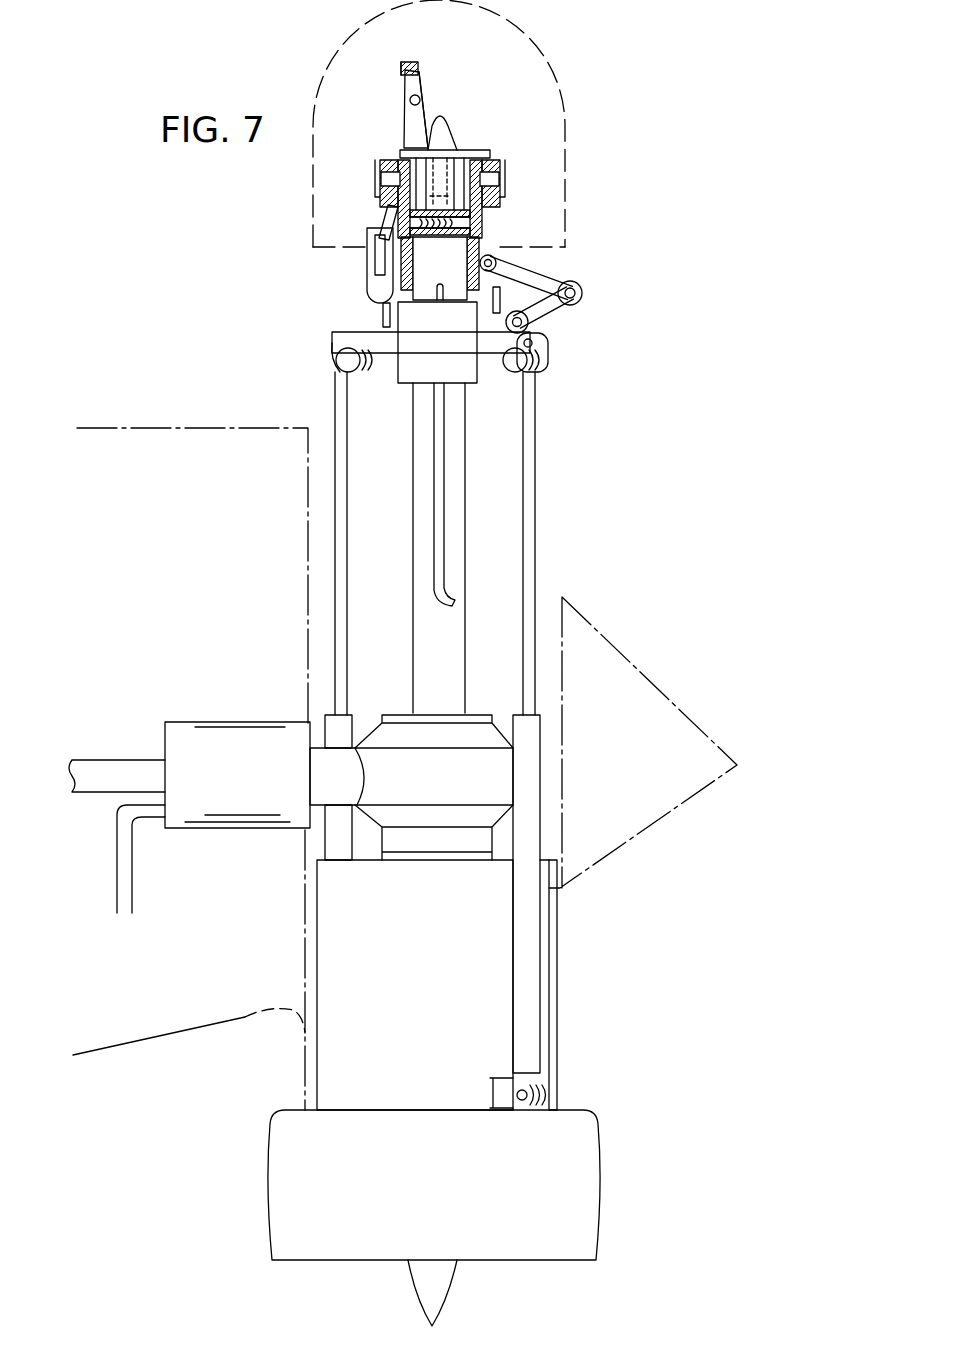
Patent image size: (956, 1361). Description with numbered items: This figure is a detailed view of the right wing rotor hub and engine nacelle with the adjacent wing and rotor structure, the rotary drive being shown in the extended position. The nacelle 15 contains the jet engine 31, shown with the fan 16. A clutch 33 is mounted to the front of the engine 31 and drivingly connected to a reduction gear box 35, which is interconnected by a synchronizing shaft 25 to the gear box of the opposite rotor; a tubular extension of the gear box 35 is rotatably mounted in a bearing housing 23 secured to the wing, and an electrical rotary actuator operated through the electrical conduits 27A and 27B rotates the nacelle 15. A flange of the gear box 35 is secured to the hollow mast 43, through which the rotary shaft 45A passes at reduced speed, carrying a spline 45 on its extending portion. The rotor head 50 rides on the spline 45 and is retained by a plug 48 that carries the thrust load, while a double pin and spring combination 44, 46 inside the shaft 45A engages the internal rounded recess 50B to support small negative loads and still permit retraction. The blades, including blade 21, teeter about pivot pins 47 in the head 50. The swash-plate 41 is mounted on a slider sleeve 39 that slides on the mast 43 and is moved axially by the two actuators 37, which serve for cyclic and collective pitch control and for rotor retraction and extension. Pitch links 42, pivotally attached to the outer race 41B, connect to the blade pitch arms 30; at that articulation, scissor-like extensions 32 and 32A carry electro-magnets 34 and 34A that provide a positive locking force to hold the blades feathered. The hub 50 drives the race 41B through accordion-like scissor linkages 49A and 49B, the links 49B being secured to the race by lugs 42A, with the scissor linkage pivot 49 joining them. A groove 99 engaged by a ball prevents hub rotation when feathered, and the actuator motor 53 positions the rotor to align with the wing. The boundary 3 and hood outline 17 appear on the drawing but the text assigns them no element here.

The machine housing boundary 3 is at (124, 427).
The nacelle 15 is at (304, 1058).
The fan 16 is at (268, 1201).
The hood 17 is at (540, 42).
The rotor blade 21 is at (443, 172).
The bearing housing 23 is at (224, 731).
The synchronizing shaft 25 is at (108, 764).
The electrical conduit 27A is at (116, 862).
The electrical conduit 27B is at (133, 897).
The blade pitch arm 30 is at (438, 112).
The jet engine 31 is at (322, 1088).
The scissor-like extension 32 is at (405, 97).
The scissor-like extension 32A is at (428, 77).
The clutch 33 is at (445, 842).
The electro-magnet 34 is at (402, 71).
The electro-magnet 34A is at (410, 66).
The reduction gear box 35 is at (500, 792).
The actuator 37 is at (537, 488).
The slider sleeve 39 is at (410, 316).
The swash-plate 41 is at (336, 326).
The outer race 41B is at (332, 332).
The pitch link 42 is at (410, 148).
The lug 42A is at (530, 332).
The hollow mast 43 is at (462, 462).
The pin 44 is at (473, 222).
The spring 46 is at (440, 222).
The spline 45 is at (447, 168).
The rotary shaft 45A is at (384, 236).
The pivot pin 47 is at (392, 173).
The plug 48 is at (487, 162).
The pin 49 is at (497, 240).
The scissor linkage 49A is at (530, 275).
The scissor linkage 49B is at (553, 312).
The rotor head 50 is at (487, 252).
The internal rounded recess 50B is at (470, 221).
The actuator motor 53 is at (377, 283).
The groove 99 is at (440, 550).